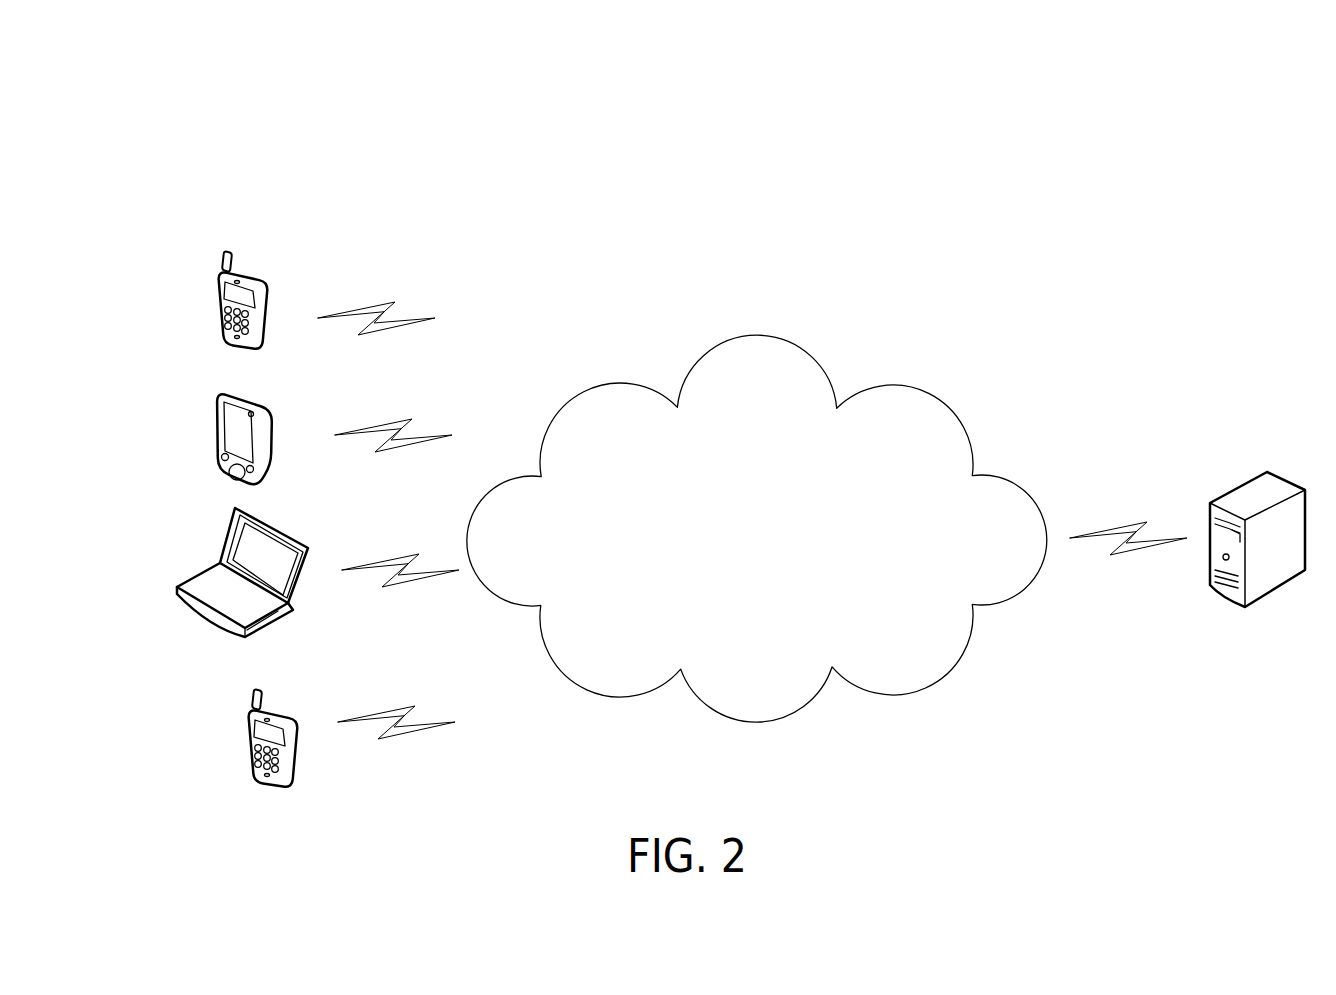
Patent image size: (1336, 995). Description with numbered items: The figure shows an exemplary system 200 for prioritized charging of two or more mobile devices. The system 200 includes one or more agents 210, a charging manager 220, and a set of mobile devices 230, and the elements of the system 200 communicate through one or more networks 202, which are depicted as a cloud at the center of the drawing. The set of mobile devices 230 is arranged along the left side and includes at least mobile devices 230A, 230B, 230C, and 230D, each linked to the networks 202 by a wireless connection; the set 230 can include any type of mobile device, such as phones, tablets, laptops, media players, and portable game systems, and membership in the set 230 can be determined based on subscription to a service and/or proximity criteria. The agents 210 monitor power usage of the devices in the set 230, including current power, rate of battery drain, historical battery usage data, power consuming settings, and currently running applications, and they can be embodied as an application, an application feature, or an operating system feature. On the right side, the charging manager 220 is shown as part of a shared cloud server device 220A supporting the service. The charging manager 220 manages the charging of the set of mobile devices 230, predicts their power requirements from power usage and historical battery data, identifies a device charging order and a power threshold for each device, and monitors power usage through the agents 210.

The system 200 is at (1204, 140).
The networks 202 is at (735, 576).
The agents 210 is at (314, 219).
The charging manager 220 is at (1232, 397).
The shared cloud server device 220A is at (1257, 517).
The set of mobile devices 230 is at (272, 176).
The mobile device 230A is at (203, 265).
The mobile device 230B is at (203, 418).
The mobile device 230C is at (183, 553).
The mobile device 230D is at (219, 735).